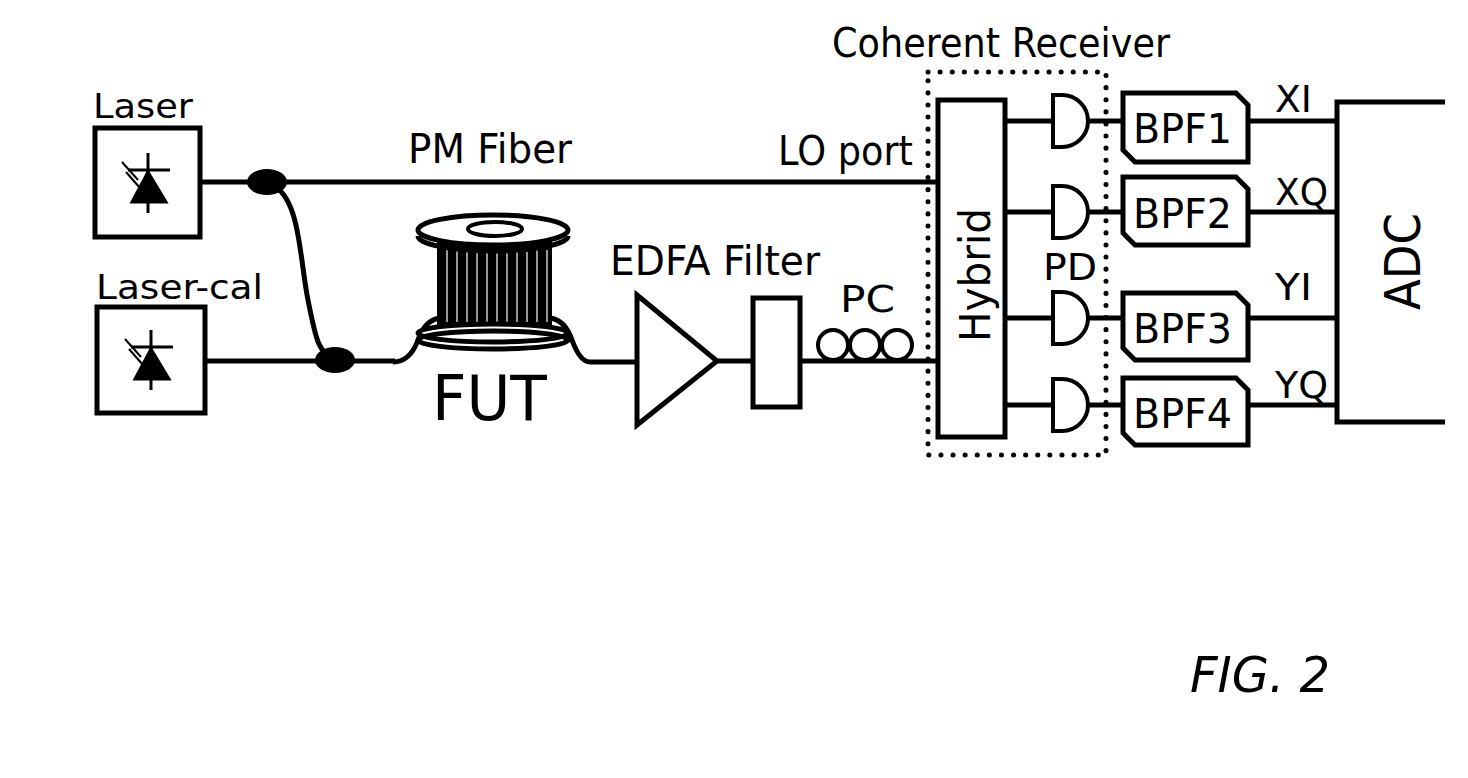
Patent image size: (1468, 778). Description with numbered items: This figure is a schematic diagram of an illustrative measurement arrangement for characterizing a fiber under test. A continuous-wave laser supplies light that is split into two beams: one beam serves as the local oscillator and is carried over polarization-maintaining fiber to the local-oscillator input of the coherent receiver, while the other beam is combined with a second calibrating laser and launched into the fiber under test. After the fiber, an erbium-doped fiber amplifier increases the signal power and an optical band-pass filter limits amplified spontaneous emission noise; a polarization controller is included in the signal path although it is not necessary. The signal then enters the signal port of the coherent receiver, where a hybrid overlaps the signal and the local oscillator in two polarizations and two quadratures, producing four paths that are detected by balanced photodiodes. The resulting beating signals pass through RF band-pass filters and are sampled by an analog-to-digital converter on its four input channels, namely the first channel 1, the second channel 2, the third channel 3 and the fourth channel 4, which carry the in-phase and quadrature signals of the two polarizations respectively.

The ADC input channel 1 (XI) 1 is at (1314, 119).
The ADC input channel 2 (XQ) 2 is at (1314, 221).
The ADC input channel 3 (YI) 3 is at (1314, 344).
The ADC input channel 4 (YQ) 4 is at (1314, 404).